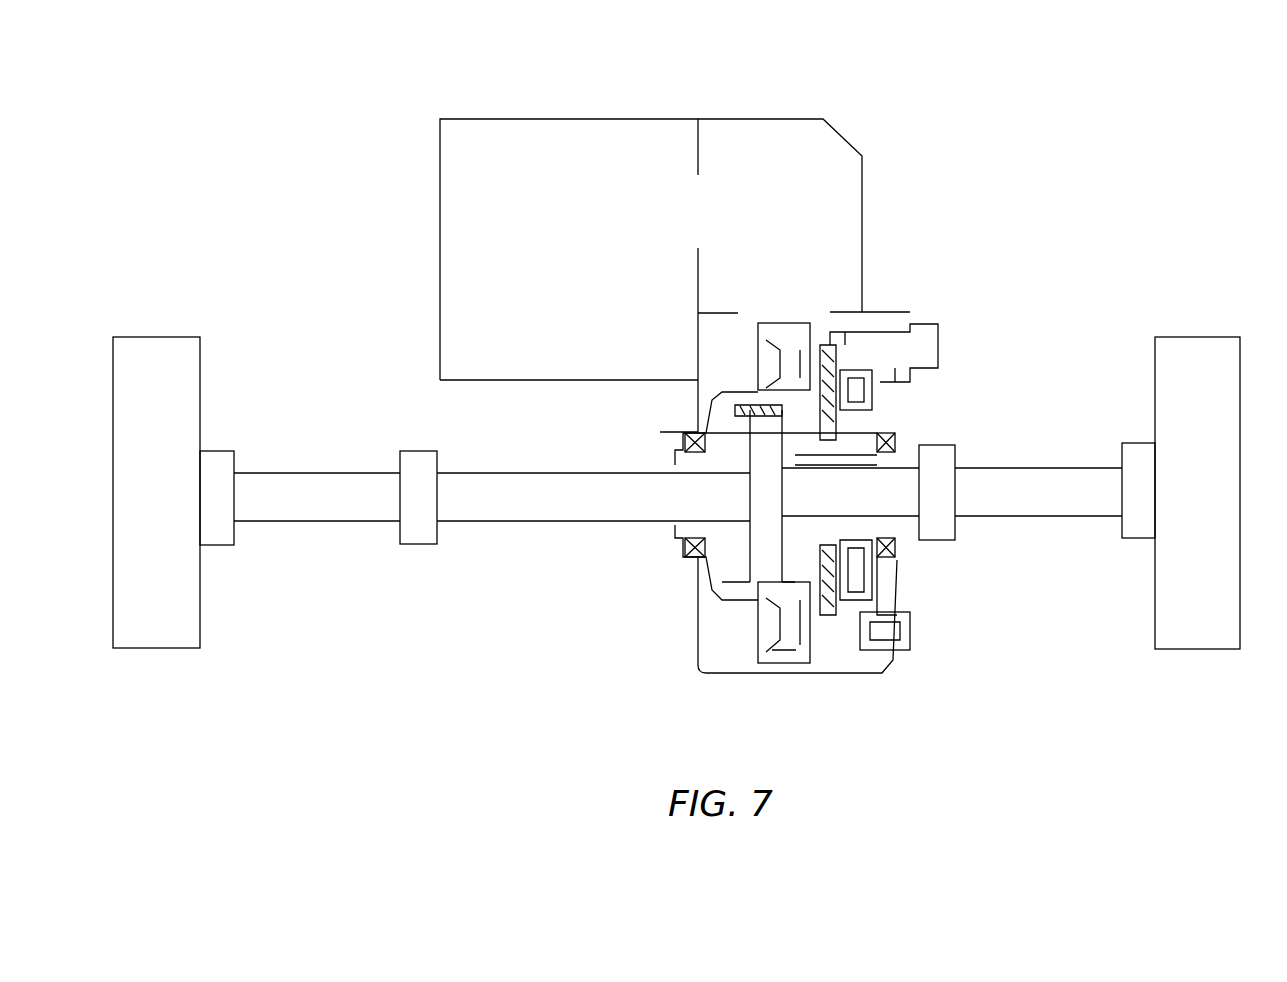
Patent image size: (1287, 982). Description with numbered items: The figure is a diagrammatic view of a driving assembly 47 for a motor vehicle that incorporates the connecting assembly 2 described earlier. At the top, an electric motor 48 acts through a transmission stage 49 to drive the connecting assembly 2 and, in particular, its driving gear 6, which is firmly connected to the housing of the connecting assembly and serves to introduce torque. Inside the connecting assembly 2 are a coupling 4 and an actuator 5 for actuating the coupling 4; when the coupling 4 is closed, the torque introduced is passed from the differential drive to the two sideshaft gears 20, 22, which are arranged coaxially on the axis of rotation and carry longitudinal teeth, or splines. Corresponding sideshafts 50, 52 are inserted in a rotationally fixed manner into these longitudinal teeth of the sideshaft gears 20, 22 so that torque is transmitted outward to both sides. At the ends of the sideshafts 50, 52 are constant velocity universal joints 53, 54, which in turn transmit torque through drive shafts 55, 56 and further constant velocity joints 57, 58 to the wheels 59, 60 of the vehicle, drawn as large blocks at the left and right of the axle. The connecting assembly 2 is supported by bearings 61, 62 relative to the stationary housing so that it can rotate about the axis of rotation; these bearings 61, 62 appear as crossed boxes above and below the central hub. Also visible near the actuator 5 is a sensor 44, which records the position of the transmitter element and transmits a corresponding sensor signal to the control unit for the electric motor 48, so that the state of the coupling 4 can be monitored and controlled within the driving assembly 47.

The connecting assembly 2 is at (816, 294).
The coupling 4 is at (793, 407).
The actuator 5 is at (868, 398).
The driving gear 6 is at (776, 336).
The first sideshaft gear 20 is at (740, 556).
The second sideshaft gear 22 is at (805, 562).
The sensor 44 is at (912, 330).
The driving assembly 47 is at (297, 90).
The electric motor 48 is at (583, 136).
The transmission stage 49 is at (777, 136).
The sideshaft 50 is at (553, 513).
The sideshaft 52 is at (850, 507).
The constant velocity universal joint 53 is at (415, 536).
The constant velocity universal joint 54 is at (940, 531).
The drive shaft 55 is at (313, 512).
The drive shaft 56 is at (1037, 502).
The constant velocity joint 57 is at (218, 538).
The wheel hub 58 is at (1133, 531).
The wheel 59 is at (190, 641).
The wheel 60 is at (1226, 527).
The bearing 61 is at (690, 556).
The bearing 62 is at (893, 552).